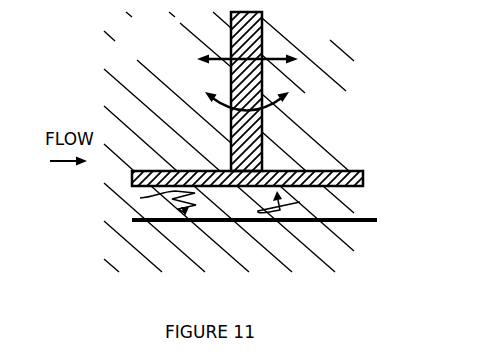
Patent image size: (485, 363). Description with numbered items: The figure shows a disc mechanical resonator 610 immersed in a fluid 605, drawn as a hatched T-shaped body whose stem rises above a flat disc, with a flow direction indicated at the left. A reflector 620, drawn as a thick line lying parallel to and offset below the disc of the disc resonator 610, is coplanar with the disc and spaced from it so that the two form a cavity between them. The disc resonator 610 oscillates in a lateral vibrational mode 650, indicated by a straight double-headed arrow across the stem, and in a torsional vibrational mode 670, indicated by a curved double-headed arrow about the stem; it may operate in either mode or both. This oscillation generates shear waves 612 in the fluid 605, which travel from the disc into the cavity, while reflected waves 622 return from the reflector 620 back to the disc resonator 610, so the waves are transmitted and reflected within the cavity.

The fluid 605 is at (153, 46).
The disc resonator 610 is at (279, 172).
The shear waves 612 is at (140, 198).
The reflector 620 is at (364, 224).
The reflected waves 622 is at (300, 202).
The lateral vibrational mode 650 is at (279, 53).
The torsional vibrational mode 670 is at (280, 104).